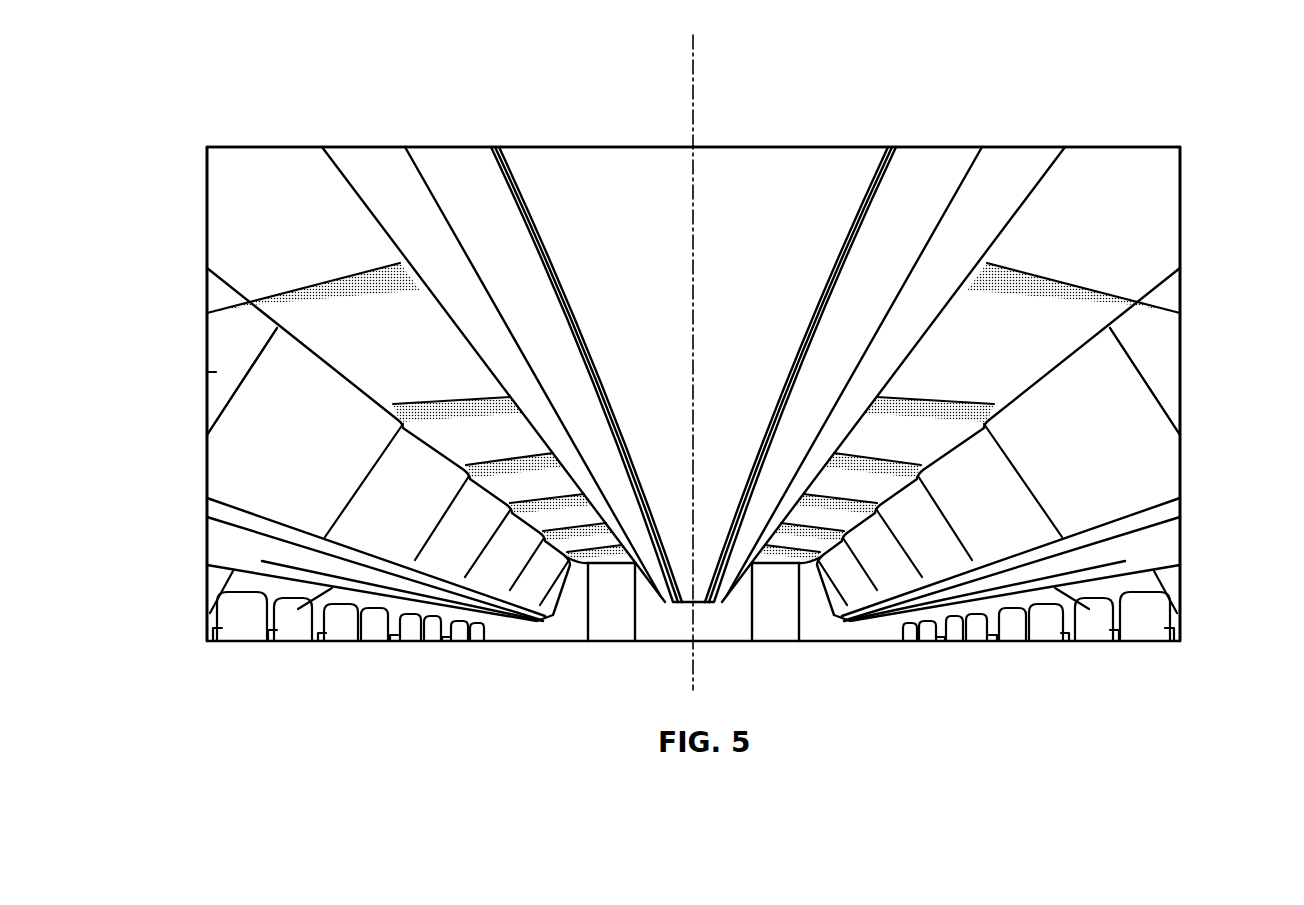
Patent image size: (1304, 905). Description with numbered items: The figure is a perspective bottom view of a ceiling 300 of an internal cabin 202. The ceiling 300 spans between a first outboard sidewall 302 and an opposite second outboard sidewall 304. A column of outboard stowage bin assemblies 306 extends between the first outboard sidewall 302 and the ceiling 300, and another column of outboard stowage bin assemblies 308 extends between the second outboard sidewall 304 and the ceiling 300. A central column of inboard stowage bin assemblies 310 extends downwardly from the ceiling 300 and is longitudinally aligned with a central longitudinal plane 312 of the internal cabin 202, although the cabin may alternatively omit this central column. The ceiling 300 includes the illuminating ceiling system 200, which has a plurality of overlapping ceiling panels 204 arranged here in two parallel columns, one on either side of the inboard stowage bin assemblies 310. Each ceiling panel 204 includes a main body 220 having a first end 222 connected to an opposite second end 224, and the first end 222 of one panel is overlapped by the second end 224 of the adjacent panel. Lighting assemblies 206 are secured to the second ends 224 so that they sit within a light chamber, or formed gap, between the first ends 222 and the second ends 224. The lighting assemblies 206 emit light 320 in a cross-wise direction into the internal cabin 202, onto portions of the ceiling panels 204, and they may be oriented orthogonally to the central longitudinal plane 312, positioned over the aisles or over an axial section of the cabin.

The illuminating ceiling system 200 is at (283, 118).
The internal cabin 202 is at (1077, 115).
The ceiling panel 204 is at (240, 223).
The lighting assembly 206 is at (367, 345).
The main body 220 is at (320, 312).
The first end 222 is at (330, 253).
The second end 224 is at (392, 263).
The ceiling 300 is at (436, 52).
The first outboard sidewall 302 is at (210, 535).
The second outboard sidewall 304 is at (1170, 542).
The outboard stowage bin assemblies 306 is at (216, 372).
The outboard stowage bin assemblies 308 is at (1170, 373).
The inboard stowage bin assemblies 310 is at (777, 156).
The central longitudinal plane 312 is at (700, 78).
The light 320 is at (300, 297).